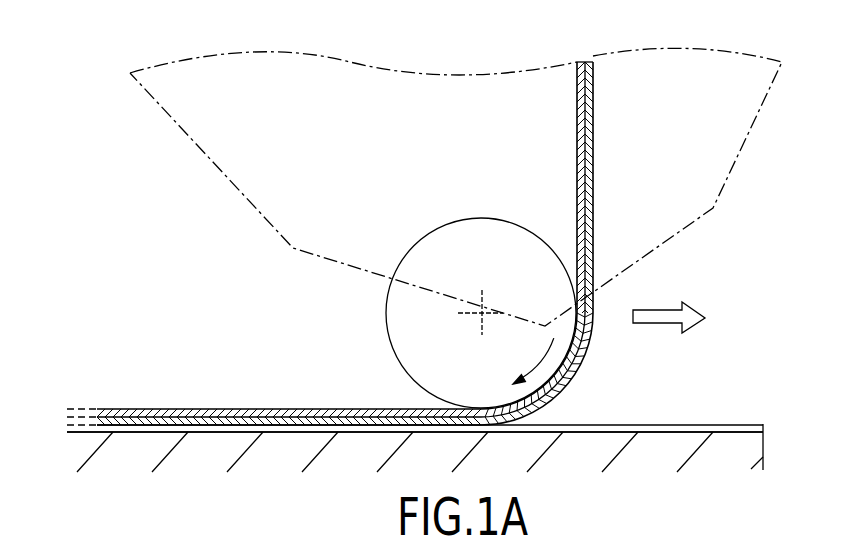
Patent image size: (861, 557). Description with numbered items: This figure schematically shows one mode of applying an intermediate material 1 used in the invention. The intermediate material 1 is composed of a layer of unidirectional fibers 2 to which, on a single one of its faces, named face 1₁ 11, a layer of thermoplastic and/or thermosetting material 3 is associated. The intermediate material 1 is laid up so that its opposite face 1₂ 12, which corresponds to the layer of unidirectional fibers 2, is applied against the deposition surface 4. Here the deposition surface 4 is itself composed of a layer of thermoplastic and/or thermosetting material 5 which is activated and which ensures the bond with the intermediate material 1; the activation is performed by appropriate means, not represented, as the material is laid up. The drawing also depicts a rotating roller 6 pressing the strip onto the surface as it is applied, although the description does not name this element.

The intermediate material 1 is at (361, 243).
The layer of unidirectional fibers 2 is at (593, 165).
The layer of thermoplastic and/or thermosetting material 3 is at (577, 138).
The deposition surface 4 is at (703, 405).
The layer of thermoplastic and/or thermosetting material 5 is at (651, 425).
The roller 6 is at (450, 376).
The face 1₁ 11 is at (577, 197).
The face 1₂ 12 is at (593, 232).